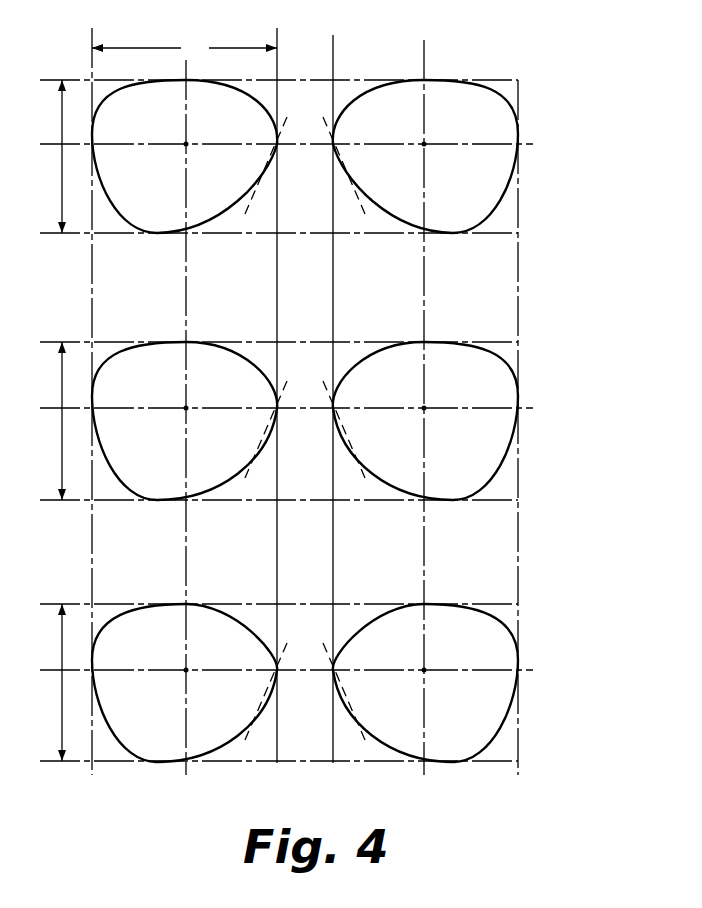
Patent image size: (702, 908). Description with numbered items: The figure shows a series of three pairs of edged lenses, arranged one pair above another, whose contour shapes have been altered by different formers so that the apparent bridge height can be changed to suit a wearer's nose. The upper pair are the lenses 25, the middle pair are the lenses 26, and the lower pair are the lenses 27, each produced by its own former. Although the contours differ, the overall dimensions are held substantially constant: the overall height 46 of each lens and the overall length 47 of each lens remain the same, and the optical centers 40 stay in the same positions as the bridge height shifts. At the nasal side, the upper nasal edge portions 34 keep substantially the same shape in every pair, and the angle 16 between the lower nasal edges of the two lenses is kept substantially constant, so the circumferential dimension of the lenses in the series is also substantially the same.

The lenses 25 is at (537, 118).
The lenses 26 is at (536, 390).
The lenses 27 is at (549, 668).
The optical centers 40 is at (188, 143).
The angle between the lower nasal edges 16 is at (352, 203).
The upper nasal edge portions 34 is at (273, 112).
The overall height 46 is at (62, 420).
The overall length 47 is at (184, 48).